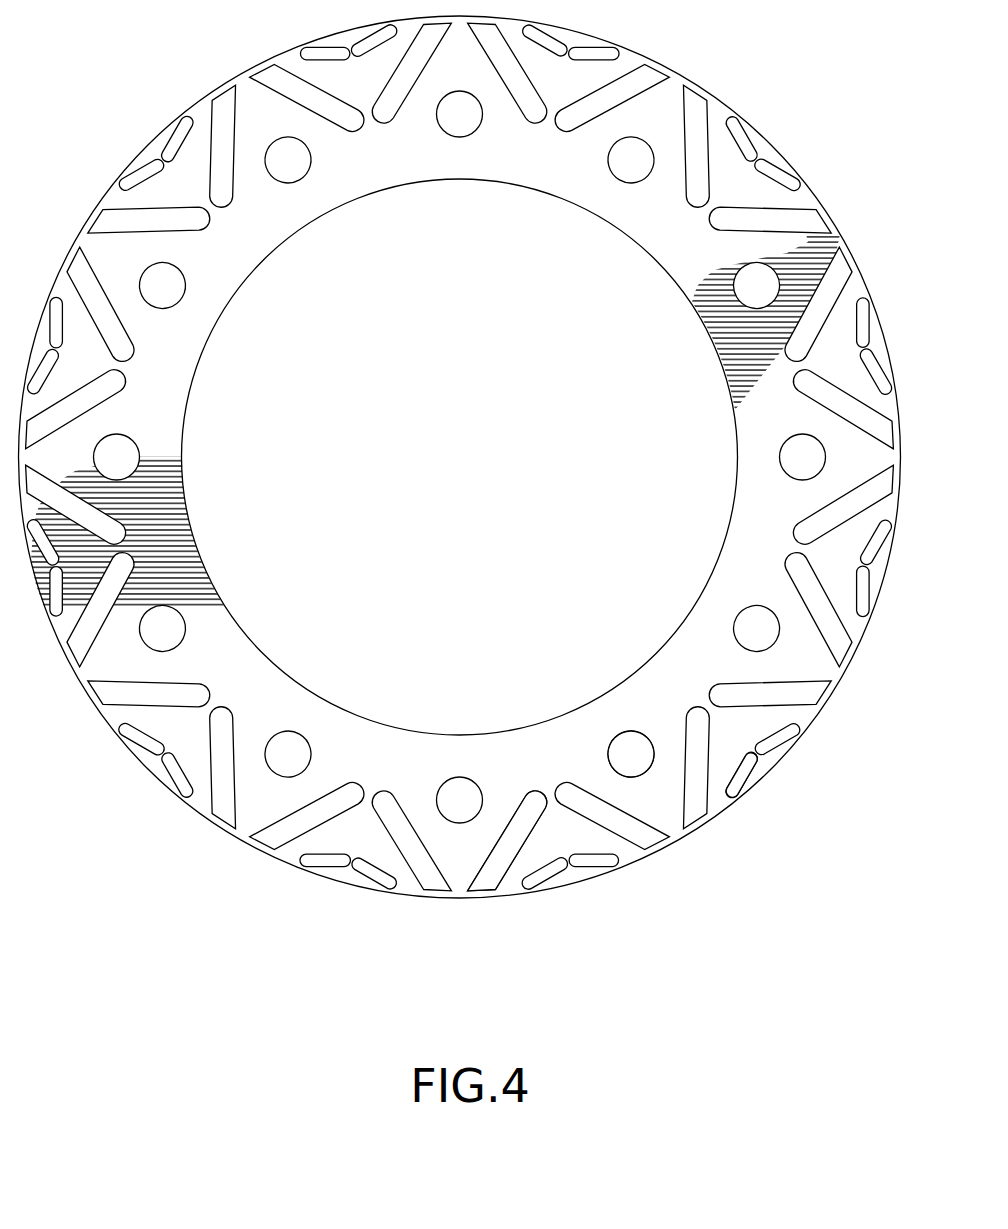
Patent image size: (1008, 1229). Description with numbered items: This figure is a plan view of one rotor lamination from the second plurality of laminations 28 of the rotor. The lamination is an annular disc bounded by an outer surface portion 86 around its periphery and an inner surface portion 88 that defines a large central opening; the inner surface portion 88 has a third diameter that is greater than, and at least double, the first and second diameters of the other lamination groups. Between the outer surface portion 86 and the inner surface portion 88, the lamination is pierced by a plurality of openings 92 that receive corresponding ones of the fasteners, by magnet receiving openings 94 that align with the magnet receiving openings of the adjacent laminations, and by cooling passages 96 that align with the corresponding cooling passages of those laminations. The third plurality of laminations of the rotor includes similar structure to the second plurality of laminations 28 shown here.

The second plurality of laminations 28 is at (459, 510).
The outer surface portion 86 is at (818, 717).
The inner surface portion 88 is at (695, 605).
The openings 92 is at (626, 743).
The magnet receiving openings 94 is at (503, 865).
The cooling passages 96 is at (745, 773).